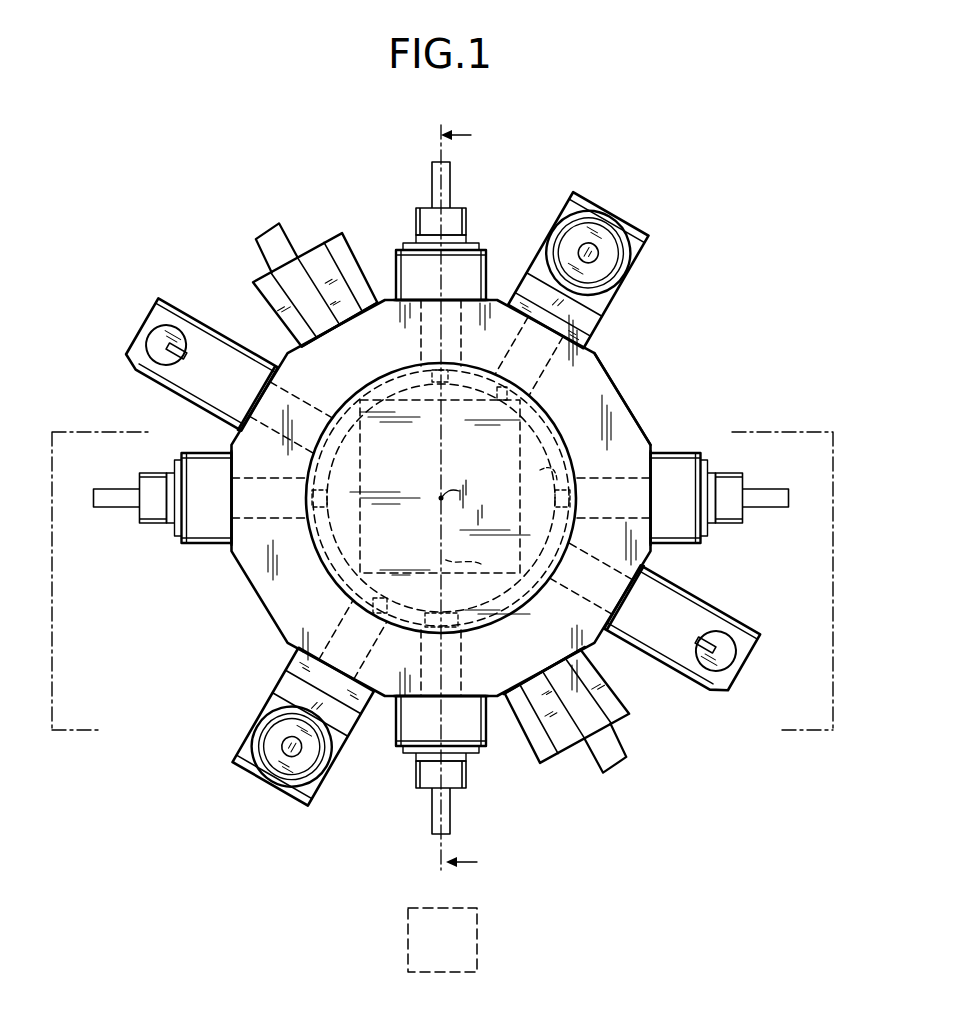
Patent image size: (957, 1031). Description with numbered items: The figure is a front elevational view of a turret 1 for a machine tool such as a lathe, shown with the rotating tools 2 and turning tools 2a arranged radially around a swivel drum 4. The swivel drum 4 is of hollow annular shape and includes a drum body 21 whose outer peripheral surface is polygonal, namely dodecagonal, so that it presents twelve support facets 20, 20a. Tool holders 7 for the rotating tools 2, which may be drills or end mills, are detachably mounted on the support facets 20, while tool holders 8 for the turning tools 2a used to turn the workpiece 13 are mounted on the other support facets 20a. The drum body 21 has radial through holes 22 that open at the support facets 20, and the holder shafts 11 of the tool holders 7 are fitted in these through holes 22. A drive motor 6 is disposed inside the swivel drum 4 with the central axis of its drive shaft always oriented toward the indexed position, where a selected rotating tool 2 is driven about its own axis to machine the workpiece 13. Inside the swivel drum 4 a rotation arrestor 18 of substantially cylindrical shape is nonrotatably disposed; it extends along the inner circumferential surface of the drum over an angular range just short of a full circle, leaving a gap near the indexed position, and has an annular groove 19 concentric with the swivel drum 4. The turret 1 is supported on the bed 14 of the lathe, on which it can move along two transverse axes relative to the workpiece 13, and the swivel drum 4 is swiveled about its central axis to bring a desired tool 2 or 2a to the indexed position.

The turret 1 is at (591, 158).
The rotating tool 2 is at (763, 492).
The turning tool 2a is at (744, 631).
The swivel drum 4 is at (611, 369).
The drive motor 6 is at (553, 442).
The tool holder 7 is at (685, 455).
The tool holder 8 is at (720, 603).
The holder shaft 11 is at (455, 637).
The workpiece 13 is at (478, 926).
The bed 14 is at (820, 430).
The rotation arrestor 18 is at (577, 468).
The annular groove 19 is at (555, 545).
The support facet 20 is at (653, 456).
The support facet 20a is at (642, 577).
The drum body 21 is at (636, 401).
The radial through hole 22 is at (461, 678).